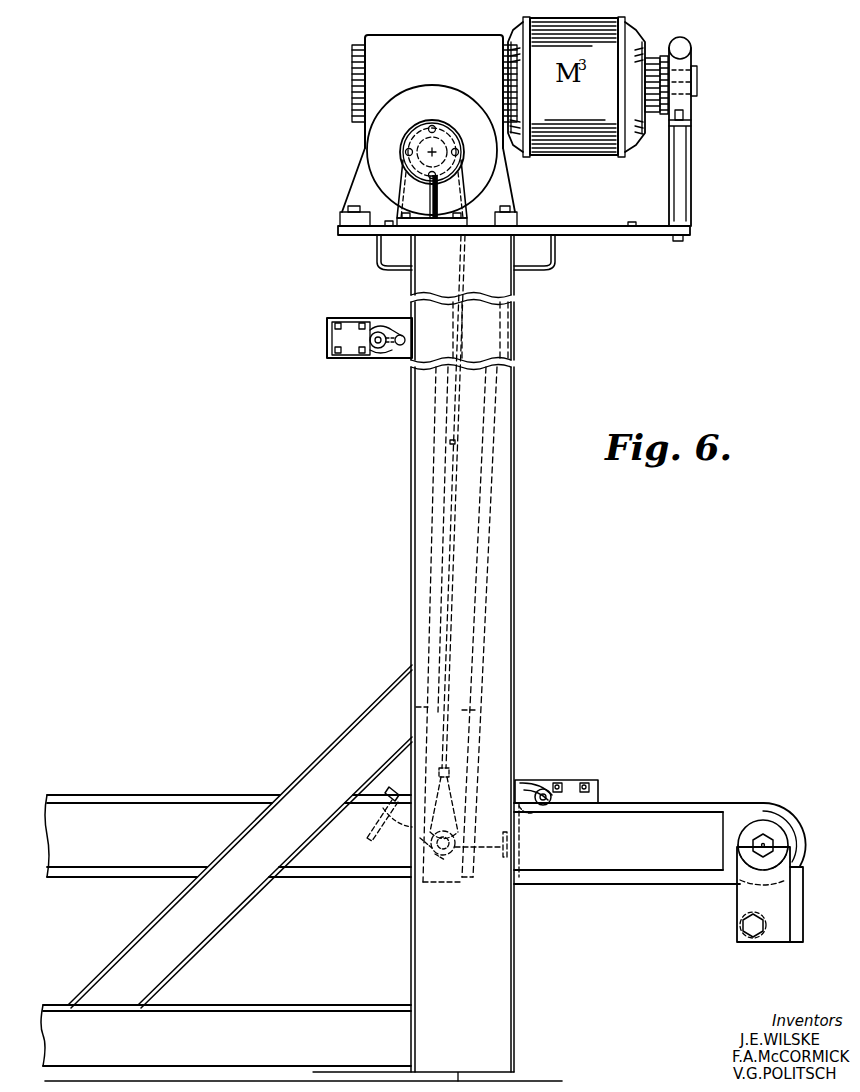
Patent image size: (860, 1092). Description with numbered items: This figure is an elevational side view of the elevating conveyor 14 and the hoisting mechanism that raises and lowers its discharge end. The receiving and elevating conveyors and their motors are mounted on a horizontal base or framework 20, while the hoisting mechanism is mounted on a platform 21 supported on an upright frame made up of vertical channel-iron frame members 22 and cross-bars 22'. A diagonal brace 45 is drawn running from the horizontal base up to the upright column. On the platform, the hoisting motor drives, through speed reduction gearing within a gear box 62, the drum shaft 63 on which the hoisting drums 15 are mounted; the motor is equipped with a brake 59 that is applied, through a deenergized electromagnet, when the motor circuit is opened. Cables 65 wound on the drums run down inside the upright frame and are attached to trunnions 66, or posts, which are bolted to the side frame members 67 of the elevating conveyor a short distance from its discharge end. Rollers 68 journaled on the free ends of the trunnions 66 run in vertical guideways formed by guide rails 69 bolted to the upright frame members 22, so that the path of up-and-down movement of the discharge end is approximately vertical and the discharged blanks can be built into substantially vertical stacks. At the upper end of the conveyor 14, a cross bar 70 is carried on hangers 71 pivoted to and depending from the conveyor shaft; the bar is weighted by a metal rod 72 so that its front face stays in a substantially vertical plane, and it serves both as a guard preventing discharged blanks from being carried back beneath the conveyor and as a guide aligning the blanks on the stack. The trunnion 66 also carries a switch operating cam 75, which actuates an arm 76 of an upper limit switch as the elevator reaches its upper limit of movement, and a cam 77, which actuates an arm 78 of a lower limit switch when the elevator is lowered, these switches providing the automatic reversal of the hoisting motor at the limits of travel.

The elevating conveyor 14 is at (226, 773).
The hoisting drums 15 is at (432, 125).
The horizontal base or framework 20 is at (263, 1018).
The platform 21 is at (633, 210).
The vertical channel-iron frame members 22 is at (303, 658).
The cross-bars 22' is at (457, 255).
The diagonal brace 45 is at (249, 803).
The brake 59 is at (681, 72).
The gear box 62 is at (453, 23).
The drum shaft 63 is at (445, 139).
The cables 65 is at (465, 274).
The trunnions 66 is at (458, 829).
The side frame members 67 is at (152, 839).
The rollers 68 is at (440, 820).
The guide rails 69 is at (428, 502).
The cross bar 70 is at (798, 893).
The hangers 71 is at (746, 900).
The metal rod 72 is at (776, 903).
The switch operating cam 75 is at (392, 790).
The arm of upper limit switch 76 is at (392, 328).
The cam 77 is at (527, 779).
The arm of lower limit switch 78 is at (533, 790).